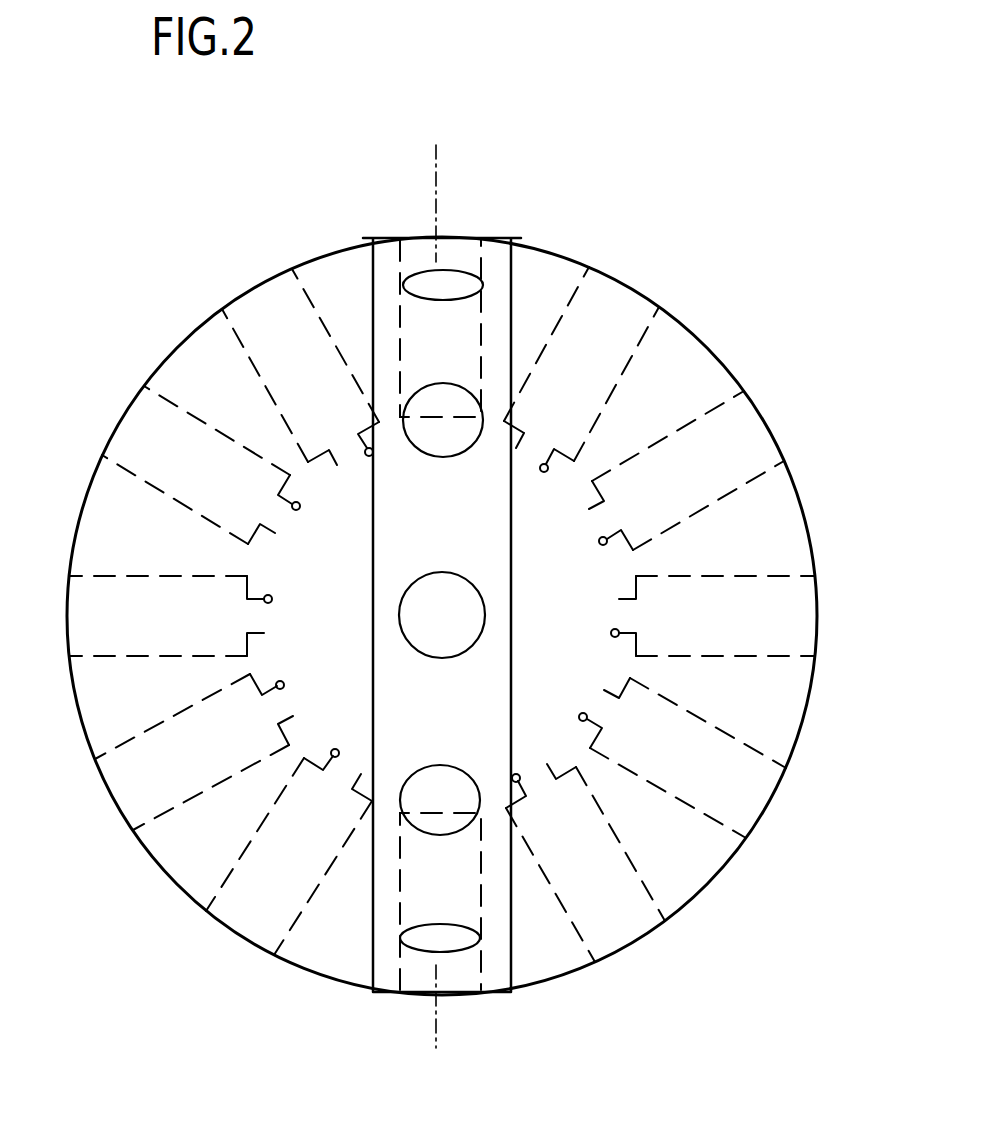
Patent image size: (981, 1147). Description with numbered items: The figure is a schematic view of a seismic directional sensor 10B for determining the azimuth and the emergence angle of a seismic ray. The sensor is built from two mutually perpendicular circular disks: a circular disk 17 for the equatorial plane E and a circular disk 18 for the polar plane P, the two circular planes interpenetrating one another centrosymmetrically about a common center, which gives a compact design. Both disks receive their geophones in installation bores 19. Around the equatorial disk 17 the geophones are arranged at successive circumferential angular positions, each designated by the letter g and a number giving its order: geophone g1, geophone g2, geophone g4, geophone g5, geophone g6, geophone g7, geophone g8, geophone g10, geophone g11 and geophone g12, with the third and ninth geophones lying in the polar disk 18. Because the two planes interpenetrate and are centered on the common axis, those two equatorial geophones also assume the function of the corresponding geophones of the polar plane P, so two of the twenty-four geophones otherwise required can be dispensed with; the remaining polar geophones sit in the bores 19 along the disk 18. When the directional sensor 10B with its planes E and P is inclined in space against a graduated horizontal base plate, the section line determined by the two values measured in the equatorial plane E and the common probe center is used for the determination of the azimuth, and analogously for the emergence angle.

The directional sensor 10B is at (442, 553).
The circular disk 17 is at (700, 226).
The circular disk 18 is at (375, 282).
The installation bores 19 is at (452, 604).
The polar plane P is at (435, 1030).
The geophone g1 is at (752, 420).
The geophone g2 is at (617, 302).
The geophone g4 is at (279, 291).
The geophone g5 is at (148, 413).
The geophone g6 is at (88, 611).
The geophone g7 is at (131, 808).
The geophone g8 is at (263, 930).
The geophone g10 is at (632, 918).
The geophone g11 is at (752, 805).
The geophone g12 is at (800, 618).